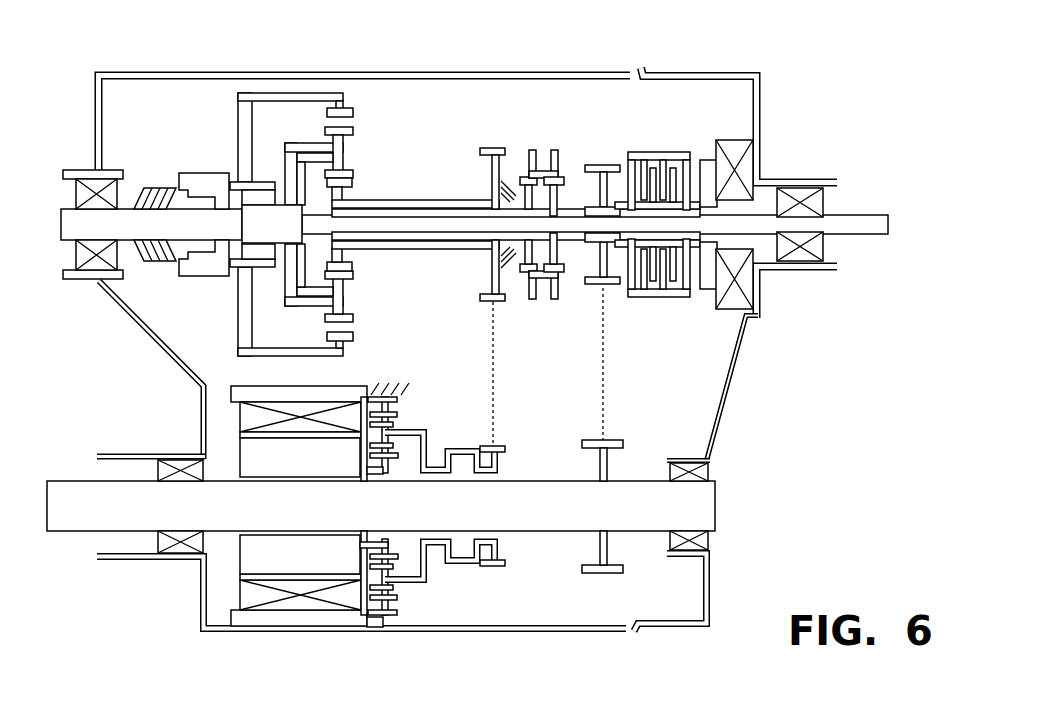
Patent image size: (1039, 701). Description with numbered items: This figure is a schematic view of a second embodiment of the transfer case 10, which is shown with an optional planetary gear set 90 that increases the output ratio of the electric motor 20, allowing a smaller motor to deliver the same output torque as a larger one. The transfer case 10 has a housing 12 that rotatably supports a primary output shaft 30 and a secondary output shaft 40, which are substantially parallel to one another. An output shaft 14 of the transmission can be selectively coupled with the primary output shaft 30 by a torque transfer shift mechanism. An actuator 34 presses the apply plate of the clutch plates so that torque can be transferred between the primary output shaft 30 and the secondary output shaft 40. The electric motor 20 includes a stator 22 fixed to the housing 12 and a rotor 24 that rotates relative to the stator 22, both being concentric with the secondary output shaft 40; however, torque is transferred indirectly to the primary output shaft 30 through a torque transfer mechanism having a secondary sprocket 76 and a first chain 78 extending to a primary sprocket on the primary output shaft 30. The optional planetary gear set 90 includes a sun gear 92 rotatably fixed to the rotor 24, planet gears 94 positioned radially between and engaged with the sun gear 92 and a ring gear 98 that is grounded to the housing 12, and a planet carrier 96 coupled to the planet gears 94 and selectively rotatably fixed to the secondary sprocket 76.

The transfer case 10 is at (452, 322).
The housing 12 is at (337, 70).
The output shaft of the transmission 14 is at (62, 223).
The electric motor 20 is at (348, 470).
The stator 22 is at (247, 417).
The rotor 24 is at (258, 453).
The primary output shaft 30 is at (857, 226).
The actuator 34 is at (753, 291).
The secondary output shaft 40 is at (82, 508).
The secondary sprocket 76 is at (505, 452).
The first chain 78 is at (493, 384).
The optional planetary gear set 90 is at (449, 426).
The sun gear 92 is at (400, 557).
The planet gears 94 is at (384, 593).
The planet carrier 96 is at (410, 428).
The ring gear 98 is at (398, 613).